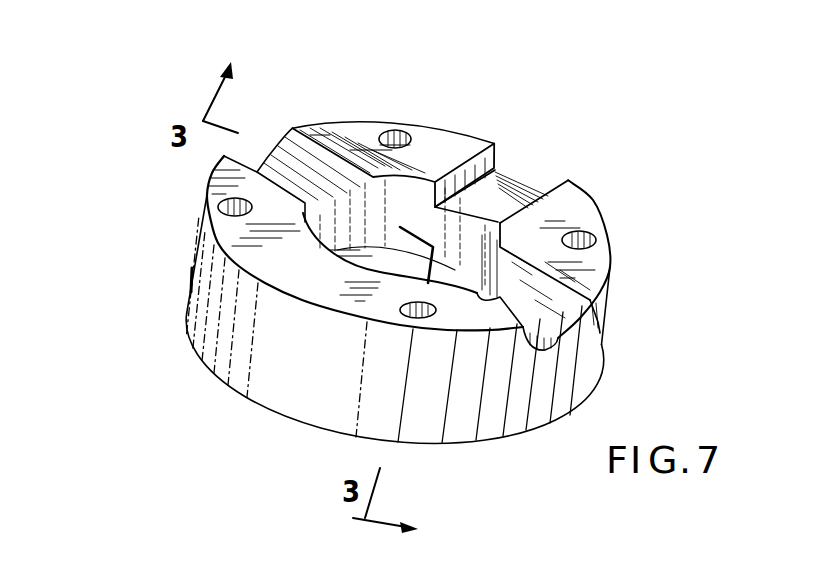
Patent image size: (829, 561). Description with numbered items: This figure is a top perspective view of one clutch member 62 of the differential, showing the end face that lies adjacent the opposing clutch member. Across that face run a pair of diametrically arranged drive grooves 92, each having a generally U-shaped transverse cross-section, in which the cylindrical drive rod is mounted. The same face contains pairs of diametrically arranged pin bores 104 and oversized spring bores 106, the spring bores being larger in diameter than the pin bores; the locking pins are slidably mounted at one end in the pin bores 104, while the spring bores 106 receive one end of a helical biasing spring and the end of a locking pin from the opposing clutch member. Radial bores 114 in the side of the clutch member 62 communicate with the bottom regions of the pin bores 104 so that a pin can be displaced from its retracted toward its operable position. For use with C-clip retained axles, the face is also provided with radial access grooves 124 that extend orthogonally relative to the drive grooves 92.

The clutch member 62 is at (215, 222).
The drive grooves 92 is at (338, 135).
The pin bores 104 is at (228, 196).
The spring bores 106 is at (396, 137).
The radial bores 114 is at (193, 277).
The radial access grooves 124 is at (515, 193).